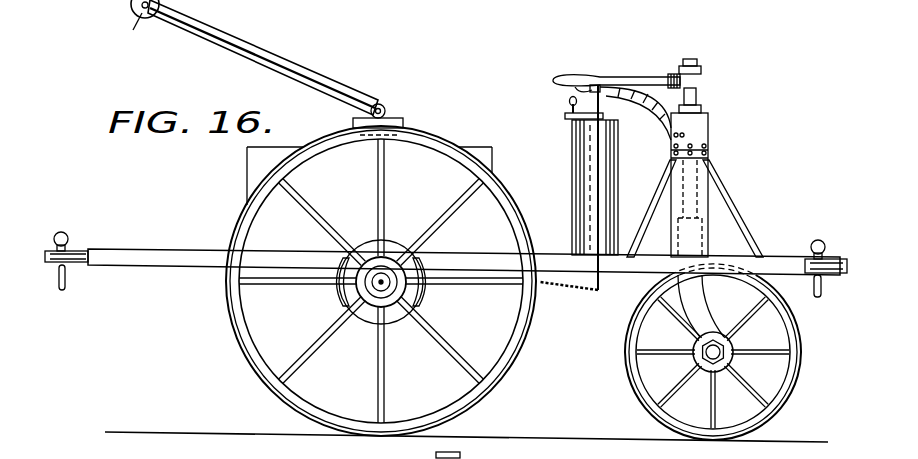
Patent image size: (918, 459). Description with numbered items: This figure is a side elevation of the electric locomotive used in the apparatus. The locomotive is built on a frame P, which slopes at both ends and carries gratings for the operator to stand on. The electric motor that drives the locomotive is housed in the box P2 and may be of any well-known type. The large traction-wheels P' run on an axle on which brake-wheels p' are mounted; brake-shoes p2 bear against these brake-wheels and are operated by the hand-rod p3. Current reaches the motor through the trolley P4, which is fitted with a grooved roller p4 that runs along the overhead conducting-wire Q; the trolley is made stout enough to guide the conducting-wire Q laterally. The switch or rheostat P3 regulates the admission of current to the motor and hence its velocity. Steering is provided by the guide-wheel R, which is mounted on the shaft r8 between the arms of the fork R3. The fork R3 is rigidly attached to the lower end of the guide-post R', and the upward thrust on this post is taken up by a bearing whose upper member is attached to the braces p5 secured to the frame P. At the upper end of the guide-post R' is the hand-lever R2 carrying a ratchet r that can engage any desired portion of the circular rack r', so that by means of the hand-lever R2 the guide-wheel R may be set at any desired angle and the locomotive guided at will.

The conducting-wire Q is at (91, 0).
The grooved roller p4 is at (145, 18).
The trolley P4 is at (290, 66).
The traction-wheels P' is at (381, 219).
The box P2 is at (381, 281).
The brake-wheels p' is at (381, 304).
The brake-shoes p2 is at (448, 303).
The frame P is at (446, 268).
The switch or rheostat P3 is at (569, 106).
The circular rack r' is at (602, 168).
The hand-rod p3 is at (601, 289).
The hand-lever R2 is at (646, 77).
The ratchet r is at (619, 92).
The guide-post R' is at (714, 158).
The braces p5 is at (651, 200).
The guide-wheel R is at (725, 352).
The fork R3 is at (690, 318).
The shaft r8 is at (722, 373).